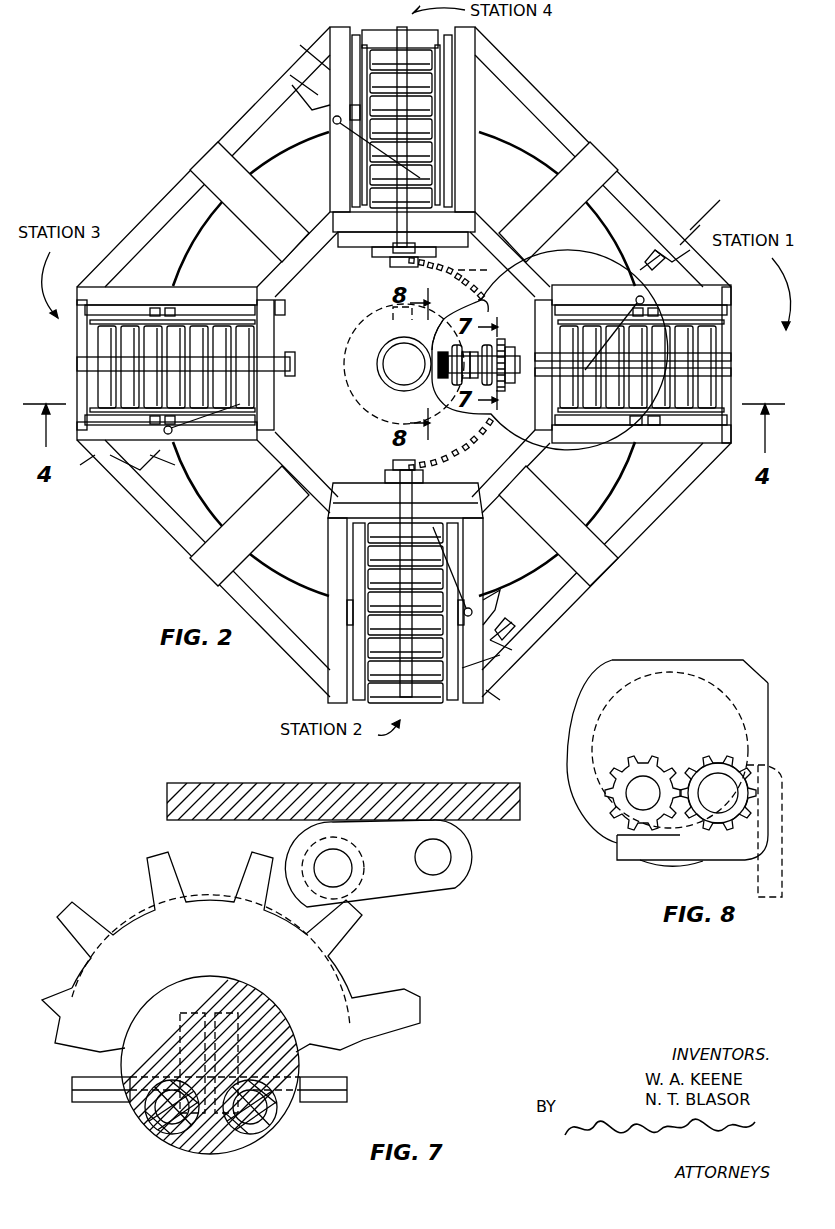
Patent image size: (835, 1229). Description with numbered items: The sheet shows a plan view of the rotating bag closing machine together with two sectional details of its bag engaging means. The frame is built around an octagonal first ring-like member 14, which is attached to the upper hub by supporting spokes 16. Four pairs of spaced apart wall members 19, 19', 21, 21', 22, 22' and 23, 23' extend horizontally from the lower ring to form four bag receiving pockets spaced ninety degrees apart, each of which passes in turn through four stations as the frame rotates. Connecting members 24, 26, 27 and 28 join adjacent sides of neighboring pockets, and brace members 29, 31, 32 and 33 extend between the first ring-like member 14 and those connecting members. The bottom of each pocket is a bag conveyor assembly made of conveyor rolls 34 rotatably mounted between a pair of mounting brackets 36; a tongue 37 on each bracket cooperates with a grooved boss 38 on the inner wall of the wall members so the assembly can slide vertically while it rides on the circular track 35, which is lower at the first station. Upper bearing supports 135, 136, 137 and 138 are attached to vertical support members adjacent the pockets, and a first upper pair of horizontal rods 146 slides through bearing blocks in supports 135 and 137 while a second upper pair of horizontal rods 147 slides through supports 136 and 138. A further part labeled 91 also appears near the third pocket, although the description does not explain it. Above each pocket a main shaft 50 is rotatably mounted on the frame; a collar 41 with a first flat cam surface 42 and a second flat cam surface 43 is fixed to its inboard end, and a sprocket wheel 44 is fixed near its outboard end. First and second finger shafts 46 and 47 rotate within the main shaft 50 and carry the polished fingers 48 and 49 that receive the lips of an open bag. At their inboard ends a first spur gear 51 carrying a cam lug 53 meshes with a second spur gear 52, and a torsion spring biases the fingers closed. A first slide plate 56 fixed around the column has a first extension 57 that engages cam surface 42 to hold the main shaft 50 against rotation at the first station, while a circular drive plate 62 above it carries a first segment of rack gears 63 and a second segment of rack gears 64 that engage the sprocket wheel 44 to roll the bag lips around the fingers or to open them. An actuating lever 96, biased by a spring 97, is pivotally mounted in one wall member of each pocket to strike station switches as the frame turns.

In FIG. 2, the first ring-like member 14 is at (503, 452).
In FIG. 2, the supporting spokes 16 is at (396, 263).
In FIG. 2, the wall member 19 is at (641, 281).
In FIG. 2, the wall member 19' is at (641, 448).
In FIG. 2, the wall member 21 is at (487, 610).
In FIG. 2, the wall member 21' is at (323, 610).
In FIG. 2, the wall member 22 is at (167, 445).
In FIG. 2, the wall member 22' is at (167, 281).
In FIG. 2, the wall member 23 is at (330, 119).
In FIG. 2, the wall member 23' is at (485, 119).
In FIG. 2, the connecting member 24 is at (690, 490).
In FIG. 2, the connecting member 26 is at (190, 556).
In FIG. 2, the connecting member 27 is at (240, 115).
In FIG. 2, the connecting member 28 is at (538, 92).
In FIG. 2, the brace member 29 is at (558, 526).
In FIG. 2, the brace member 31 is at (249, 526).
In FIG. 2, the brace member 32 is at (249, 202).
In FIG. 2, the brace member 33 is at (558, 202).
In FIG. 2, the conveyor rolls 34 is at (383, 28).
In FIG. 2, the circular track 35 is at (195, 250).
In FIG. 2, the mounting brackets 36 is at (728, 300).
In FIG. 2, the tongue 37 is at (634, 424).
In FIG. 2, the grooved boss 38 is at (652, 424).
In FIG. 8, the collar 41 is at (595, 680).
In FIG. 8, the first flat cam surface 42 is at (743, 660).
In FIG. 8, the second flat cam surface 43 is at (768, 710).
In FIG. 2, the sprocket wheel 44 is at (505, 338).
In FIG. 7, the sprocket wheel 44 is at (375, 980).
In FIG. 8, the first finger shaft 46 is at (718, 793).
In FIG. 7, the first finger shaft 46 is at (262, 1127).
In FIG. 8, the second finger shaft 47 is at (643, 793).
In FIG. 7, the second finger shaft 47 is at (150, 1122).
In FIG. 2, the first polished finger 48 is at (730, 372).
In FIG. 7, the first polished finger 48 is at (347, 1090).
In FIG. 2, the second polished finger 49 is at (730, 355).
In FIG. 7, the second polished finger 49 is at (72, 1096).
In FIG. 2, the main shaft 50 is at (458, 380).
In FIG. 8, the main shaft 50 is at (648, 668).
In FIG. 7, the main shaft 50 is at (298, 1108).
In FIG. 8, the first spur gear 51 is at (713, 760).
In FIG. 8, the second spur gear 52 is at (652, 758).
In FIG. 8, the cam lug 53 is at (632, 860).
In FIG. 2, the first slide plate 56 is at (398, 310).
In FIG. 2, the first extension 57 is at (434, 324).
In FIG. 2, the circular drive plate 62 is at (336, 288).
In FIG. 7, the circular drive plate 62 is at (167, 814).
In FIG. 2, the first segment of rack gears 63 is at (410, 464).
In FIG. 2, the second segment of rack gears 64 is at (473, 260).
In FIG. 7, the second segment of rack gears 64 is at (467, 866).
In FIG. 2, the bracket 91 is at (280, 300).
In FIG. 2, the actuating lever 96 is at (690, 230).
In FIG. 2, the spring 97 is at (648, 256).
In FIG. 2, the first upper horizontally extending bearing support 135 is at (516, 310).
In FIG. 2, the second upper horizontally extending bearing support 136 is at (348, 496).
In FIG. 2, the third upper horizontally extending bearing support 137 is at (345, 486).
In FIG. 2, the fourth upper horizontally extending bearing support 138 is at (333, 228).
In FIG. 2, the first upper pair of horizontal rods 146 is at (120, 330).
In FIG. 2, the second upper pair of horizontal rods 147 is at (443, 95).